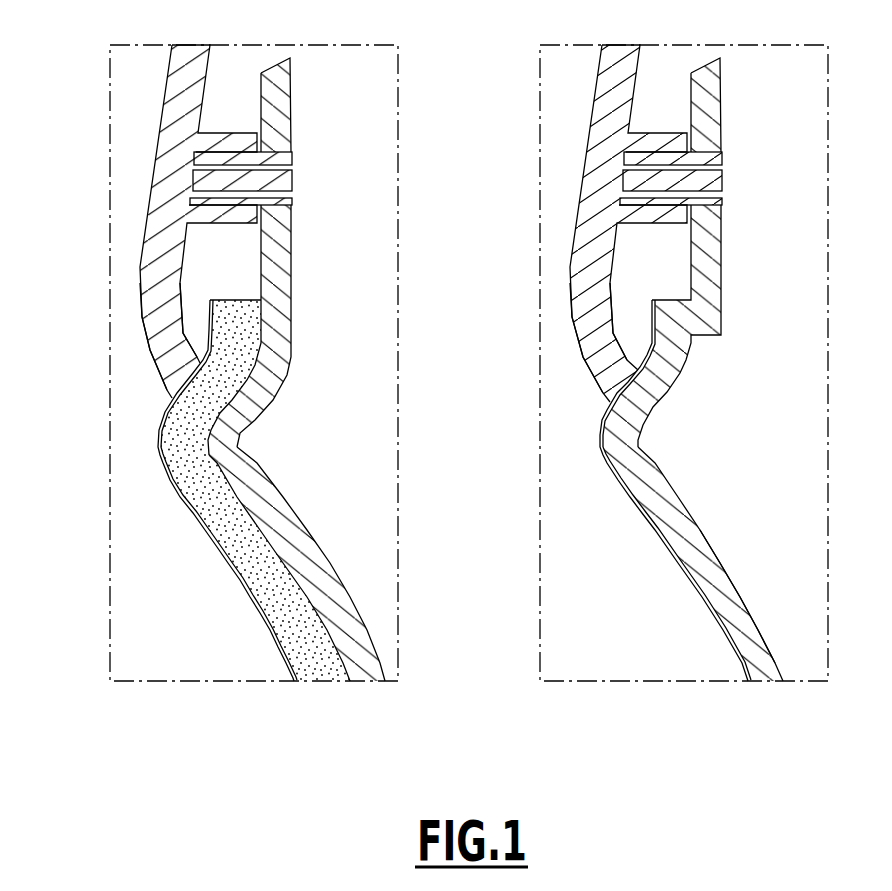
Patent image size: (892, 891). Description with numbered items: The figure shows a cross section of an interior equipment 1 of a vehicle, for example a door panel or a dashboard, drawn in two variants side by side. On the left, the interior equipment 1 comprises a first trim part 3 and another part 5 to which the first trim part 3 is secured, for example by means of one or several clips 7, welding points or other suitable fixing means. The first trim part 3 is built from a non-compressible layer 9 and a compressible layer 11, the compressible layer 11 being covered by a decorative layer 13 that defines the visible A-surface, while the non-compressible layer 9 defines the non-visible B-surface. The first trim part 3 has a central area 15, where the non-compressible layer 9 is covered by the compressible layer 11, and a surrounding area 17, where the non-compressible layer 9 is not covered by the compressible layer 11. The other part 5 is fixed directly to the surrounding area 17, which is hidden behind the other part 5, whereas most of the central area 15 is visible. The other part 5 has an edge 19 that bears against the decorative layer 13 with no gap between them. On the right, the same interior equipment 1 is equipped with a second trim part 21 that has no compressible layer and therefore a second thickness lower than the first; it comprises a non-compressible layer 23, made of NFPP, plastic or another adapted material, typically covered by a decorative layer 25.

The interior equipment 1 is at (112, 120).
The first trim part 3 is at (426, 534).
The other part 5 is at (183, 95).
The clips 7 is at (282, 179).
The non-compressible layer 9 is at (277, 527).
The compressible layer 11 is at (325, 672).
The decorative layer 13 is at (242, 580).
The central area 15 is at (305, 568).
The surrounding area 17 is at (282, 230).
The edge 19 is at (167, 363).
The second trim part 21 is at (668, 483).
The non-compressible layer 23 is at (730, 612).
The decorative layer 25 is at (655, 540).